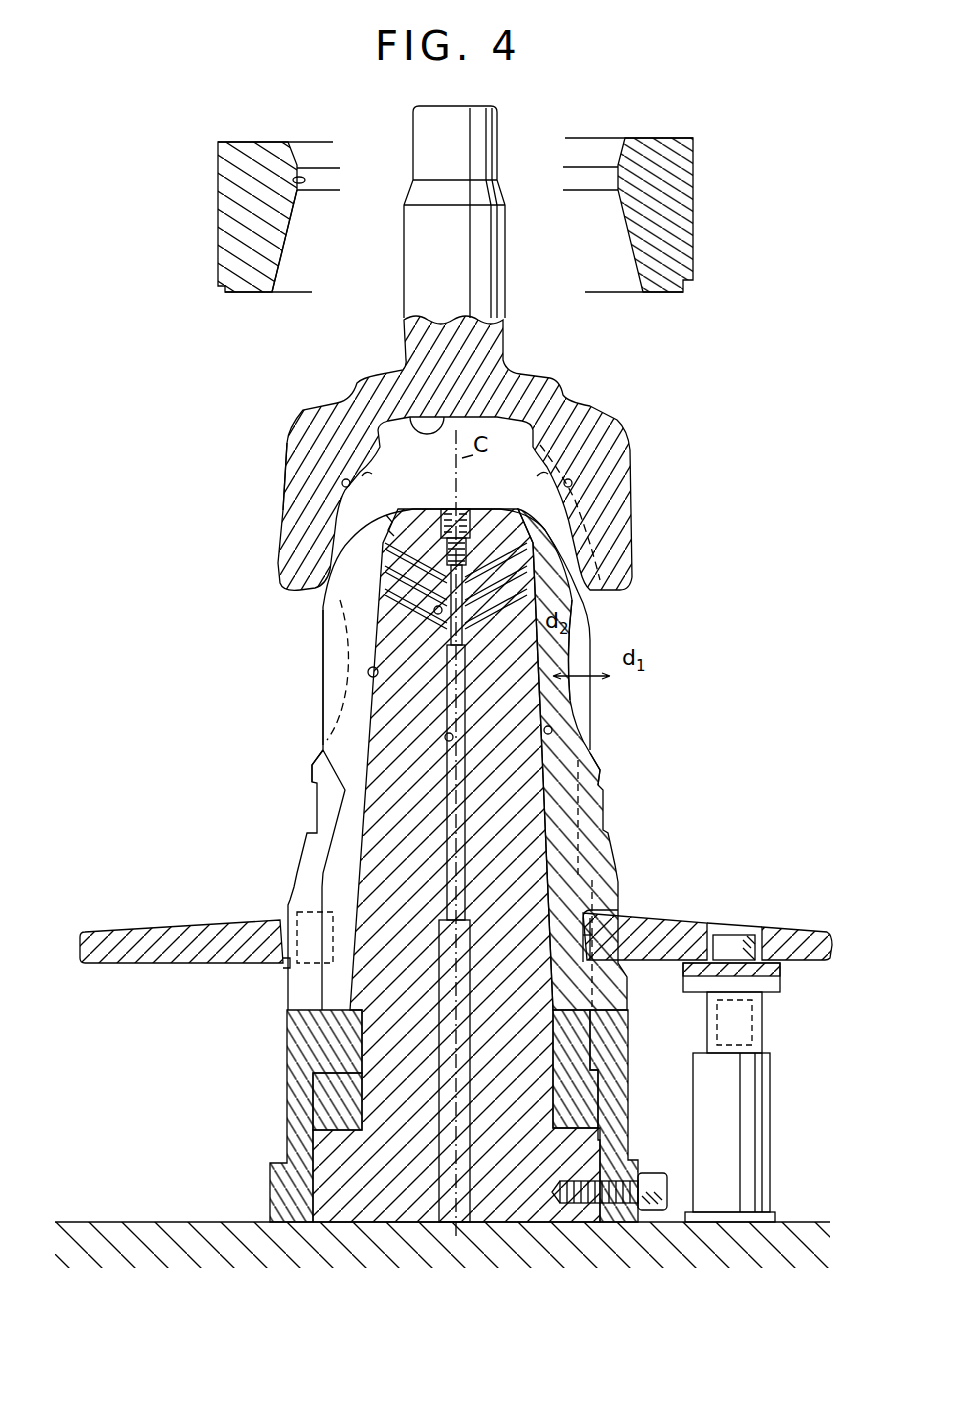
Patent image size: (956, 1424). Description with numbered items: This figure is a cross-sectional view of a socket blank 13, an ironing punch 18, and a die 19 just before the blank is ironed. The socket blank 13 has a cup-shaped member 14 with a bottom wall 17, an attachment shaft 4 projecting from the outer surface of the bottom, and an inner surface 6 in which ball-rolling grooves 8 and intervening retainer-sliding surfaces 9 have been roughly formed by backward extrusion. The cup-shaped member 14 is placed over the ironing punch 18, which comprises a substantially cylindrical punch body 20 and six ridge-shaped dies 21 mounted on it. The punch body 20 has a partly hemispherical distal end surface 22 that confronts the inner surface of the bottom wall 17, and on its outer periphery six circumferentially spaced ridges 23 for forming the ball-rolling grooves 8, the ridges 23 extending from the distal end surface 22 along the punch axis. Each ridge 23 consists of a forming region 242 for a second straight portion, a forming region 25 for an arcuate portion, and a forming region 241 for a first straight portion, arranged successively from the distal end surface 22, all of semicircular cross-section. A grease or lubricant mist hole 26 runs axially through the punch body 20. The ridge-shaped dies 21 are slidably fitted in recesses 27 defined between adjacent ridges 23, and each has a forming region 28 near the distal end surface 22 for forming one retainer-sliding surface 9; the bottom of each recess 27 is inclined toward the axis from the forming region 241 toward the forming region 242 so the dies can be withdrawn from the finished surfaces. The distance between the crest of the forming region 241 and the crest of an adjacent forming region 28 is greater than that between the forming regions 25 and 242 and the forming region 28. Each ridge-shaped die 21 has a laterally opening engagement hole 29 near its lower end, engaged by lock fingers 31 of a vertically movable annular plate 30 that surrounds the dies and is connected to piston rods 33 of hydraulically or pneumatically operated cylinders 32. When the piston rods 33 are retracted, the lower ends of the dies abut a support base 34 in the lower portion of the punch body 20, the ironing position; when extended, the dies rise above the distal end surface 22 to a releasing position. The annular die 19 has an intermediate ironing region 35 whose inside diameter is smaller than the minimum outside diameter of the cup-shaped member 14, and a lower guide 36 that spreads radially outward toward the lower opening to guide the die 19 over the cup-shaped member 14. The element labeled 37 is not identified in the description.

The attachment shaft 4 is at (490, 246).
The spherical inner surface 6 is at (352, 512).
The ball-rolling grooves 8 is at (342, 484).
The retainer-sliding surfaces 9 is at (366, 474).
The socket blank 13 is at (587, 384).
The cup-shaped member 14 is at (284, 456).
The bottom wall 17 is at (412, 420).
The ironing punch 18 is at (313, 628).
The die 19 is at (248, 141).
The punch body 20 is at (525, 810).
The ridge-shaped dies 21 is at (303, 771).
The distal end surface 22 is at (443, 508).
The ridges 23 is at (313, 669).
The forming region 25 is at (575, 592).
The grease or lubricant mist hole 26 is at (437, 614).
The recesses 27 is at (378, 675).
The forming region 28 is at (540, 607).
The engagement hole 29 is at (612, 915).
The vertically movable annular plate 30 is at (680, 935).
The lock fingers 31 is at (590, 940).
The cylinders 32 is at (779, 1116).
The piston rods 33 is at (762, 1020).
The support base 34 is at (555, 1072).
The ironing region 35 is at (300, 178).
The guide 36 is at (290, 240).
The projection 37 is at (388, 527).
The forming region 241 is at (592, 690).
The forming region 242 is at (552, 508).